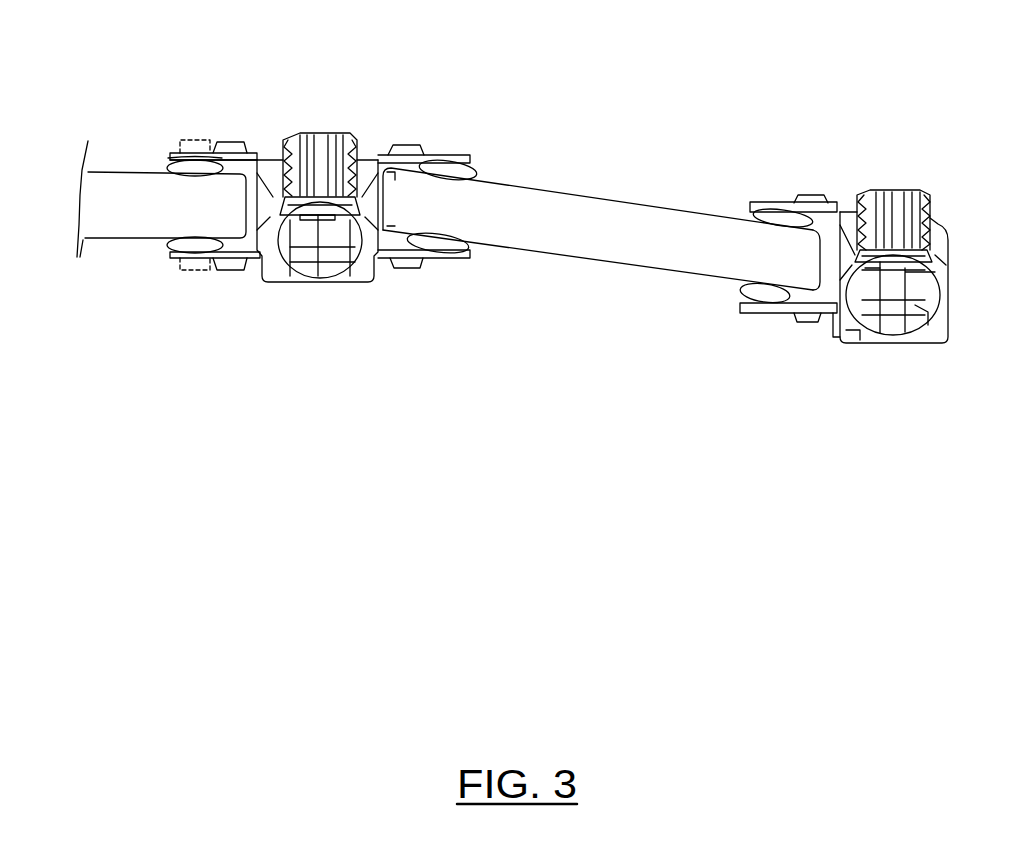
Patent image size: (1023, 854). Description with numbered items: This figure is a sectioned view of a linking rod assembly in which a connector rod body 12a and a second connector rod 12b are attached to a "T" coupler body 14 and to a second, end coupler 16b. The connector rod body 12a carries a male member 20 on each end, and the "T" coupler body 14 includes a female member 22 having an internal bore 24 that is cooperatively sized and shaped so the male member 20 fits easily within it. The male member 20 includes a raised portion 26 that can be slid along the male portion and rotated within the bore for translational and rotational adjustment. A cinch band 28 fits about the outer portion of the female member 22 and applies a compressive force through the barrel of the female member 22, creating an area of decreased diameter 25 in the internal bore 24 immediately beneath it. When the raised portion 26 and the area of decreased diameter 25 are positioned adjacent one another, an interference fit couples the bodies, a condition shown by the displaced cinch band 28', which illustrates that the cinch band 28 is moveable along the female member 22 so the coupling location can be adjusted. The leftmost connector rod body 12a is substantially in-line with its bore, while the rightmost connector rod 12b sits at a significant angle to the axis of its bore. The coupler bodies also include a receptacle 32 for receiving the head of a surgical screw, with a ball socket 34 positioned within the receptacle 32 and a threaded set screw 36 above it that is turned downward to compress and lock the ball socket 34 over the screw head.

The connector rod body 12a is at (121, 252).
The connector rod 12b is at (625, 287).
The "T" coupler body 14 is at (367, 160).
The end coupler 16b is at (940, 343).
The male member 20 is at (163, 160).
The female member 22 is at (173, 153).
The internal bore 24 is at (235, 243).
The area of decreased diameter 25 is at (260, 160).
The raised portion 26 is at (167, 247).
The cinch band 28 is at (540, 240).
The displaced cinch band 28' is at (196, 265).
The receptacle 32 is at (853, 342).
The ball socket 34 is at (925, 312).
The threaded set screw 36 is at (932, 210).